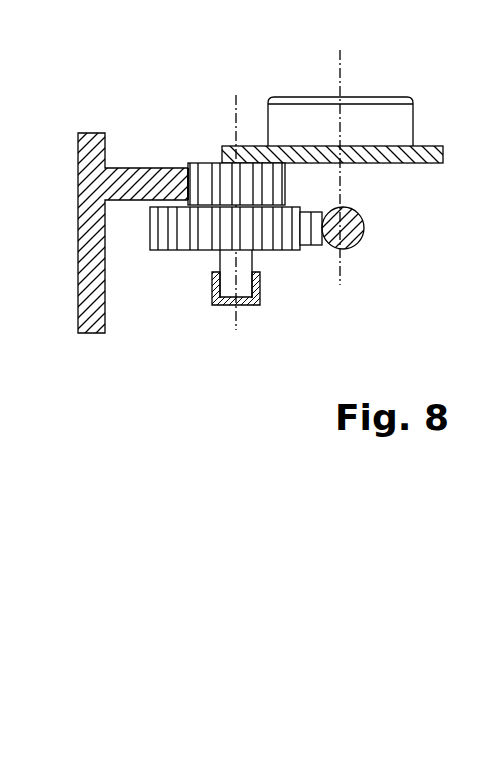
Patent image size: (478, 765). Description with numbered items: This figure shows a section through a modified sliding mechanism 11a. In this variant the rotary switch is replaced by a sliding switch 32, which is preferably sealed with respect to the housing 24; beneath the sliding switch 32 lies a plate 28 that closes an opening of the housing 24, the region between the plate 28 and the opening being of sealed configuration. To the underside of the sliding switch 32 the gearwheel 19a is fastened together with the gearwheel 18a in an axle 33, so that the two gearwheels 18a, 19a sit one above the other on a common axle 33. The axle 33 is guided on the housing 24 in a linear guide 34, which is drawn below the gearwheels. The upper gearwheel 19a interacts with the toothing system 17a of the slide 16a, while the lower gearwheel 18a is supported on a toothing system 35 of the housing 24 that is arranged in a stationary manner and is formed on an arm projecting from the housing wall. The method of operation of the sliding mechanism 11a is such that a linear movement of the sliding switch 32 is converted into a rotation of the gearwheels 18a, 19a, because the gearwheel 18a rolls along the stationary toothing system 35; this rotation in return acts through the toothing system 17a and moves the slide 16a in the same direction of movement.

The sliding mechanism 11a is at (374, 51).
The slide 16a is at (365, 228).
The toothing system 17a is at (315, 250).
The gearwheel 18a is at (168, 236).
The gearwheel 19a is at (200, 165).
The housing 24 is at (74, 244).
The circular plate 28 is at (425, 157).
The sliding switch 32 is at (421, 101).
The axle 33 is at (243, 289).
The linear guide 34 is at (218, 301).
The toothing system 35 is at (189, 170).